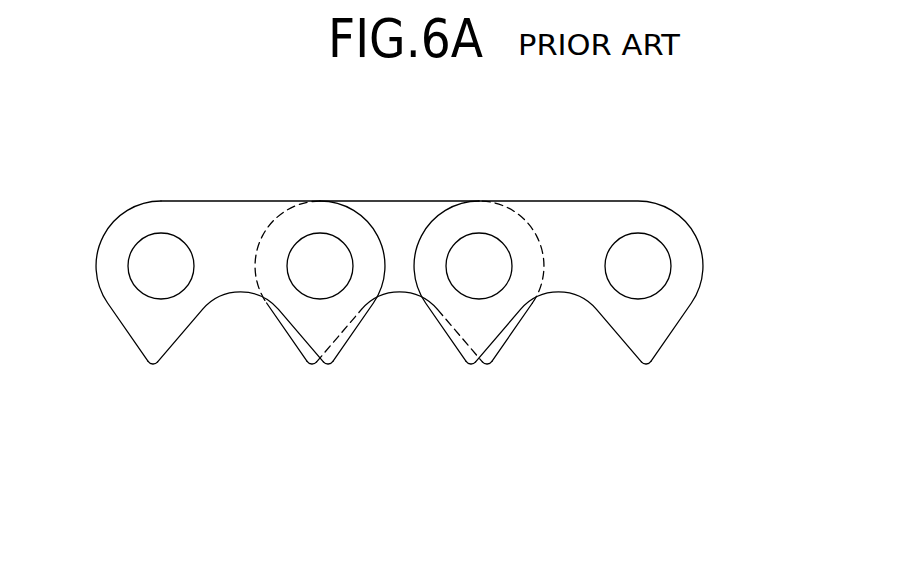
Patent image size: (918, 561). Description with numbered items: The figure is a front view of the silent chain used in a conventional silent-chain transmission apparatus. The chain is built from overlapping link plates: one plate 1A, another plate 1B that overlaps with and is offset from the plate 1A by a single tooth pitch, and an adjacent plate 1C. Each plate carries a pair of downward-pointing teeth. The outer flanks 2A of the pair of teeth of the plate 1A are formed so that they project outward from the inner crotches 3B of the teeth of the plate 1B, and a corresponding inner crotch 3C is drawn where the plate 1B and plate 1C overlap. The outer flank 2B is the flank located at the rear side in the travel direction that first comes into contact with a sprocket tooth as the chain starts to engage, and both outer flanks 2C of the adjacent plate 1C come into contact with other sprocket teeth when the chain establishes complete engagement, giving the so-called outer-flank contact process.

The plate 1A is at (207, 201).
The plate 1B is at (394, 201).
The plate 1C is at (567, 201).
The outer flanks 2A is at (133, 343).
The outer flank 2B is at (291, 339).
The outer flanks 2C is at (454, 347).
The inner crotches 3B is at (358, 325).
The flank of tooth 3C is at (512, 322).